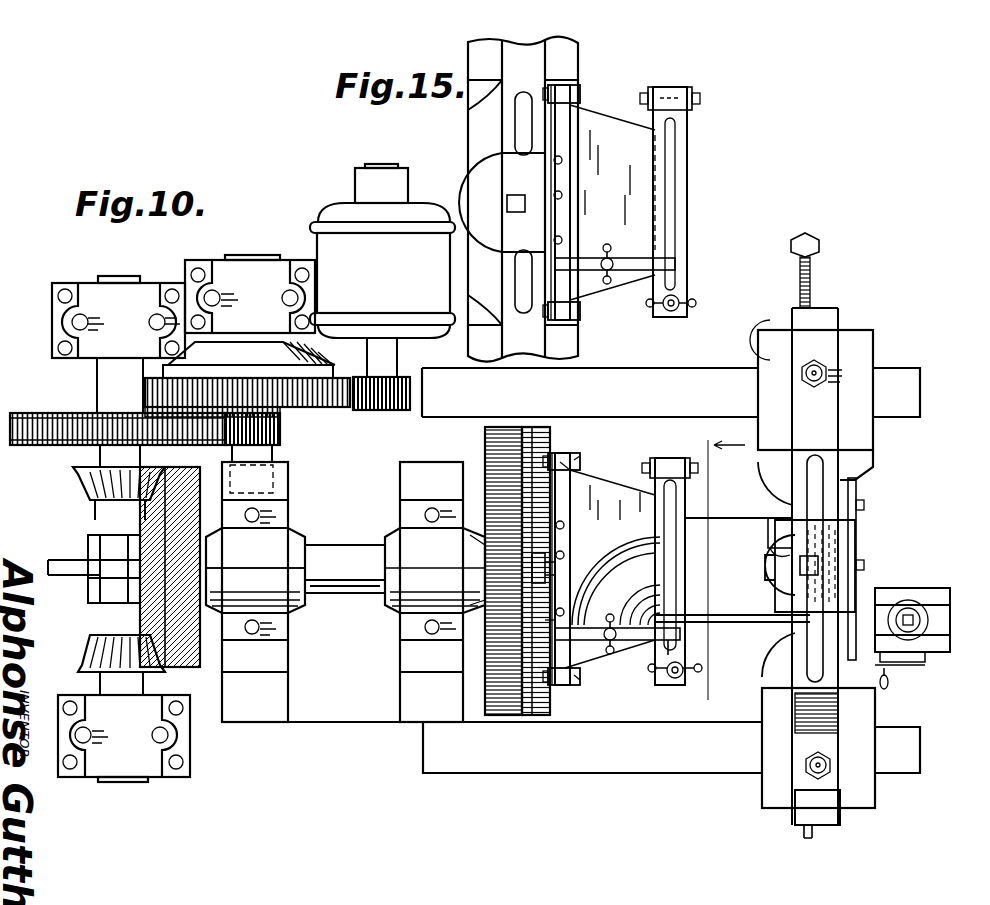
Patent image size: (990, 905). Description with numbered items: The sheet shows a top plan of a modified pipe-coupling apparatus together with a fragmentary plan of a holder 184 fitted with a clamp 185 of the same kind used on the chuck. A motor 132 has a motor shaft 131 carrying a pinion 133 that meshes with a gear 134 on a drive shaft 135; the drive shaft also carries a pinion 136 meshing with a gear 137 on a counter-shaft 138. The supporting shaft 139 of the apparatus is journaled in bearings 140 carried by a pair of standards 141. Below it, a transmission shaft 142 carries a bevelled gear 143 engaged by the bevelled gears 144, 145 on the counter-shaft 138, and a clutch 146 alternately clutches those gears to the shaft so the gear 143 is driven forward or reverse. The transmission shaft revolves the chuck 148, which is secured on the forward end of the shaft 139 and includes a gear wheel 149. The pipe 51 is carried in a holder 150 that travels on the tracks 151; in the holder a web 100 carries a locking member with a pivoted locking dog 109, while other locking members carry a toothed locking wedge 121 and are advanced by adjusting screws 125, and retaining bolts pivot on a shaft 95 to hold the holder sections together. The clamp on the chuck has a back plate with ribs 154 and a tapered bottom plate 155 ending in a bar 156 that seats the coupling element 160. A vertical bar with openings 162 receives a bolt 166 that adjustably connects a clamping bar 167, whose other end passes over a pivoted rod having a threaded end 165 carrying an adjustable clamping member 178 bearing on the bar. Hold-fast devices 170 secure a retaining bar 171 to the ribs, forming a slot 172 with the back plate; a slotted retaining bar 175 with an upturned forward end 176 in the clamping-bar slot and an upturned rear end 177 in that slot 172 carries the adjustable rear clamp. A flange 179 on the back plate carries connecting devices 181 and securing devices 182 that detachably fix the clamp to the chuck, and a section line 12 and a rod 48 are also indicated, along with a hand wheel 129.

In FIG. 10, the section line 12 is at (718, 564).
In FIG. 10, the rod 48 is at (857, 509).
In FIG. 10, the pipe 51 is at (738, 555).
In FIG. 10, the shaft 95 is at (840, 366).
In FIG. 10, the web 100 is at (808, 462).
In FIG. 10, the locking dog 109 is at (778, 514).
In FIG. 10, the locking wedge 121 is at (766, 470).
In FIG. 10, the adjusting screw 125 is at (812, 292).
In FIG. 10, the hand wheel 129 is at (930, 595).
In FIG. 10, the motor shaft 131 is at (380, 358).
In FIG. 10, the motor 132 is at (382, 251).
In FIG. 10, the pinion 133 is at (410, 393).
In FIG. 10, the gear 134 is at (318, 418).
In FIG. 10, the drive shaft 135 is at (272, 456).
In FIG. 10, the pinion 136 is at (262, 378).
In FIG. 10, the gear 137 is at (80, 420).
In FIG. 10, the counter-shaft 138 is at (97, 381).
In FIG. 10, the supporting shaft 139 is at (323, 556).
In FIG. 10, the bearings 140 is at (255, 570).
In FIG. 10, the standards 141 is at (270, 680).
In FIG. 10, the transmission shaft 142 is at (232, 568).
In FIG. 10, the bevelled gear 143 is at (178, 662).
In FIG. 10, the bevelled gear 144 is at (85, 493).
In FIG. 10, the bevelled gear 145 is at (85, 650).
In FIG. 10, the clutch 146 is at (95, 586).
In FIG. 10, the chuck 148 is at (530, 714).
In FIG. 10, the gear wheel 149 is at (500, 714).
In FIG. 10, the holder 150 is at (868, 345).
In FIG. 10, the tracks 151 is at (671, 392).
In FIG. 10, the rib 154 is at (556, 452).
In FIG. 10, the bottom plate 155 is at (620, 490).
In FIG. 10, the bar 156 is at (688, 636).
In FIG. 10, the coupling element 160 is at (616, 581).
In FIG. 10, the openings 162 is at (698, 471).
In FIG. 10, the threaded end 165 is at (683, 663).
In FIG. 15, the bolt 166 is at (700, 103).
In FIG. 10, the clamping bar 167 is at (688, 496).
In FIG. 15, the clamping bar 167 is at (676, 163).
In FIG. 10, the hold-fast devices 170 is at (578, 455).
In FIG. 15, the hold-fast devices 170 is at (583, 314).
In FIG. 10, the retaining bar 171 is at (570, 501).
In FIG. 15, the retaining bar 171 is at (570, 218).
In FIG. 10, the slot 172 is at (574, 470).
In FIG. 10, the slotted retaining bar 175 is at (640, 648).
In FIG. 15, the slotted retaining bar 175 is at (646, 278).
In FIG. 10, the upturned forward end 176 is at (698, 616).
In FIG. 10, the upturned rear end 177 is at (548, 640).
In FIG. 10, the adjustable clamping member 178 is at (672, 680).
In FIG. 15, the adjustable clamping member 178 is at (688, 306).
In FIG. 10, the flange 179 is at (538, 622).
In FIG. 15, the flange 179 is at (496, 202).
In FIG. 10, the connecting devices 181 is at (564, 555).
In FIG. 15, the connecting devices 181 is at (553, 193).
In FIG. 10, the securing devices 182 is at (564, 525).
In FIG. 15, the securing devices 182 is at (553, 160).
In FIG. 15, the holder 184 is at (494, 112).
In FIG. 15, the clamp 185 is at (603, 122).